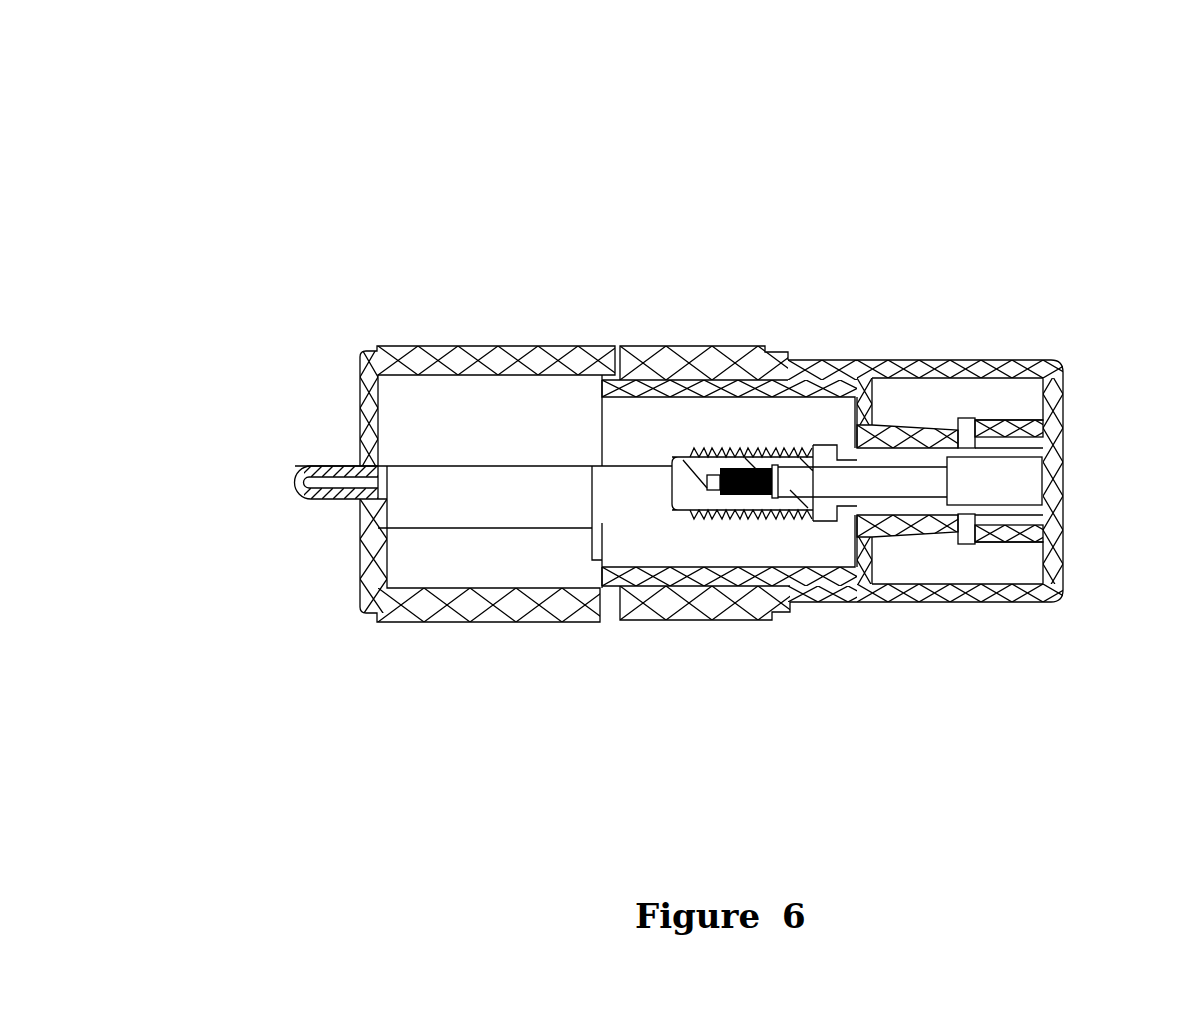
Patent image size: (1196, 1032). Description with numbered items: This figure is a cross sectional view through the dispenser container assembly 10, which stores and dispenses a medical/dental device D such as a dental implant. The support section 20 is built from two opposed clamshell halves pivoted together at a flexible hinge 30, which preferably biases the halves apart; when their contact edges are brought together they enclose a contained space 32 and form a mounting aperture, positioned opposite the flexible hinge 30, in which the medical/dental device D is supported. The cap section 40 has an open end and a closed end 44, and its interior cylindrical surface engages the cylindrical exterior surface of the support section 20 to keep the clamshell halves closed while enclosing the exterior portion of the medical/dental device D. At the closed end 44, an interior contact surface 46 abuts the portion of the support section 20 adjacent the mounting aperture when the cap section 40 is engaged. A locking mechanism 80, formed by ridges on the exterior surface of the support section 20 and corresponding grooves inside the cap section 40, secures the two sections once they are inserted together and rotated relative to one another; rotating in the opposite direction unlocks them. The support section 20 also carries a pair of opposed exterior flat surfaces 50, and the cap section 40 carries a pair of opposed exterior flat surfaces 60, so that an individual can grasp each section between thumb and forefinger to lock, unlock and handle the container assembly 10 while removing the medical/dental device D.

The dispenser container assembly 10 is at (497, 203).
The support section 20 is at (372, 562).
The flexible hinge 30 is at (318, 465).
The contained space 32 is at (623, 482).
The cap section 40 is at (908, 368).
The closed end 44 is at (1063, 481).
The interior contact surface 46 is at (1008, 420).
The exterior flat surfaces 50 is at (438, 345).
The exterior flat surfaces 60 is at (745, 343).
The locking mechanism 80 is at (655, 345).
The medical/dental device D is at (900, 503).